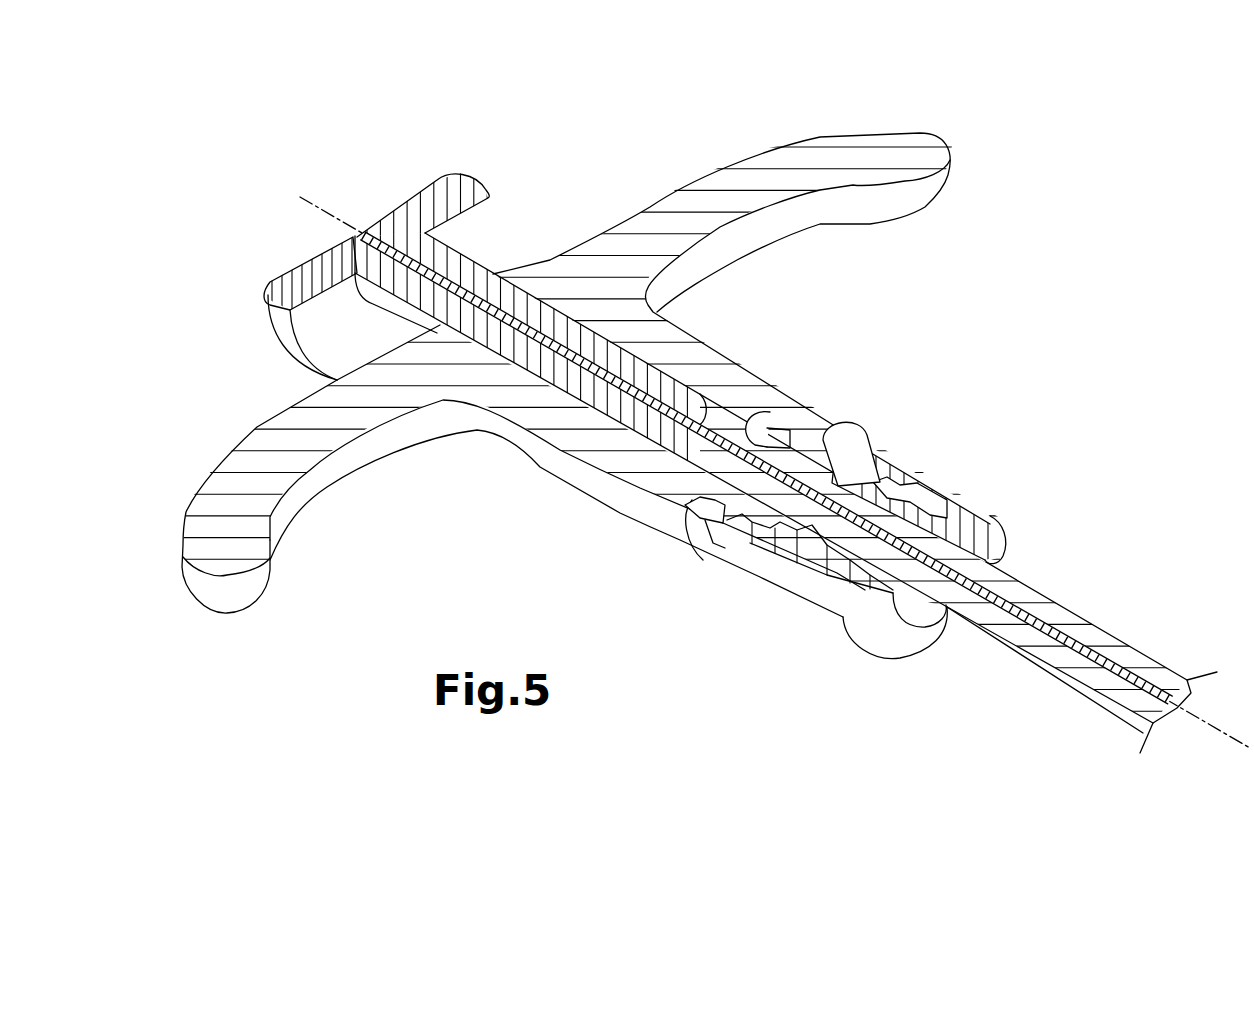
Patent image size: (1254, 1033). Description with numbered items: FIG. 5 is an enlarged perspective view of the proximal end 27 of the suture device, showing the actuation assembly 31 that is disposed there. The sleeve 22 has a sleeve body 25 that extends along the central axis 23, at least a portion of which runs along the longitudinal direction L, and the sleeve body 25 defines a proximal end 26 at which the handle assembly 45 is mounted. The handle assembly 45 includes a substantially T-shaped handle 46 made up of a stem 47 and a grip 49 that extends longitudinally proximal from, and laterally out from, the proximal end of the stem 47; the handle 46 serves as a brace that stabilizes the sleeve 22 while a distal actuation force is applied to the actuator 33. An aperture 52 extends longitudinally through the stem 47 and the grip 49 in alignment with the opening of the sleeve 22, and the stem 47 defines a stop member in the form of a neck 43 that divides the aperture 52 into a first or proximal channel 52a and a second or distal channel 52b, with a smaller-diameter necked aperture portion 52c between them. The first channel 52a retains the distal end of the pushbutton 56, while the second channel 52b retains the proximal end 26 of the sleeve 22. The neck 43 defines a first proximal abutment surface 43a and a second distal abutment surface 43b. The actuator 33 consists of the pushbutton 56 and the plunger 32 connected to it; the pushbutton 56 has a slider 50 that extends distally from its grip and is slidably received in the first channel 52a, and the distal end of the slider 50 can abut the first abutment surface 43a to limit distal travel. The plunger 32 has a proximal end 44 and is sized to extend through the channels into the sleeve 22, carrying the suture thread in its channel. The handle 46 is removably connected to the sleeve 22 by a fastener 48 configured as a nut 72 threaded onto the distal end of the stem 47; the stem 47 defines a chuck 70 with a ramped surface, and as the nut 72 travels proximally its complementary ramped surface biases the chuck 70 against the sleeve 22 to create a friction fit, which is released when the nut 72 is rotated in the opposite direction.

The sleeve 22 is at (1063, 612).
The central axis 23 is at (298, 198).
The sleeve body 25 is at (1103, 628).
The proximal end 26 is at (767, 520).
The proximal end 27 is at (633, 137).
The actuation assembly 31 is at (503, 263).
The plunger 32 is at (718, 400).
The actuator 33 is at (287, 353).
The neck 43 is at (683, 507).
The first proximal abutment surface 43a is at (772, 413).
The second distal abutment surface 43b is at (840, 438).
The proximal end 44 is at (627, 385).
The handle assembly 45 is at (213, 593).
The handle 46 is at (948, 193).
The stem 47 is at (580, 467).
The fastener 48 is at (975, 490).
The grip 49 is at (855, 133).
The slider 50 is at (453, 262).
The aperture 52 is at (742, 418).
The first channel 52a is at (685, 470).
The second channel 52b is at (945, 535).
The necked aperture portion 52c is at (713, 545).
The pushbutton 56 is at (310, 273).
The chuck 70 is at (862, 565).
The nut 72 is at (907, 642).
The longitudinal direction L is at (327, 220).